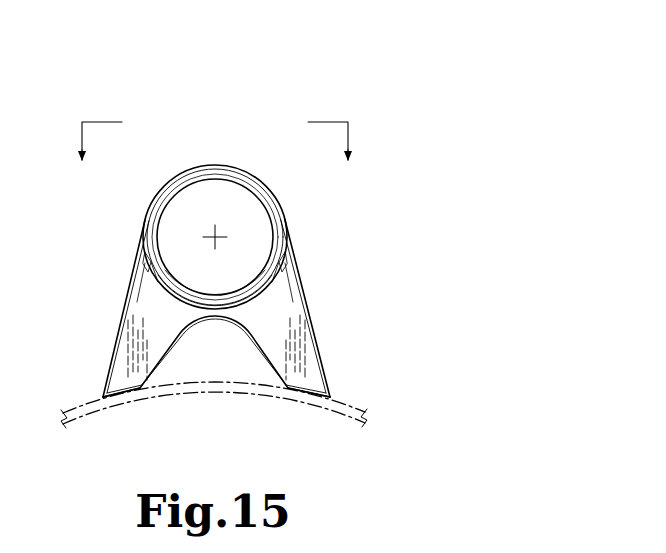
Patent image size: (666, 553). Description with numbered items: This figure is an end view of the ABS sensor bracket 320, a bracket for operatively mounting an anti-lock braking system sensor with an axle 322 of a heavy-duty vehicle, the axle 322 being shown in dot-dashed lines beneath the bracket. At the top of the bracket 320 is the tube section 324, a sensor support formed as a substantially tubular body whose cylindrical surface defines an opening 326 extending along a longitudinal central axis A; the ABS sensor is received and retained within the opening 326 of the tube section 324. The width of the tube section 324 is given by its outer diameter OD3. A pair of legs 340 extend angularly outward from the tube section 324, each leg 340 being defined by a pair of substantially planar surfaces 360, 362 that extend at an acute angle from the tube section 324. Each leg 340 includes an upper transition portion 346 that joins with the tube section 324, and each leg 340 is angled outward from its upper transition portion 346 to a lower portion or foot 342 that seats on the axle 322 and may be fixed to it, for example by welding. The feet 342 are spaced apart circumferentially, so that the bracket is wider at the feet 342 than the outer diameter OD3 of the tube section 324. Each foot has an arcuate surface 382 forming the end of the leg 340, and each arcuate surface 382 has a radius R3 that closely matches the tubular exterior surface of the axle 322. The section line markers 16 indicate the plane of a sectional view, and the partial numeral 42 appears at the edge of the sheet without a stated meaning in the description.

The ABS sensor bracket 320 is at (329, 100).
The axle 322 is at (337, 410).
The tube section 324 is at (214, 176).
The opening 326 is at (198, 192).
The legs 340 is at (150, 285).
The foot 342 is at (115, 391).
The upper transition portion 346 is at (143, 234).
The planar surface 360 is at (115, 346).
The planar surface 362 is at (168, 368).
The arcuate surface 382 is at (106, 398).
The section line 16- 16 is at (215, 157).
The longitudinal central axis A is at (218, 235).
The radius R3 is at (126, 400).
The outer diameter OD3 is at (287, 222).
The partial numeral 42 is at (14, 173).